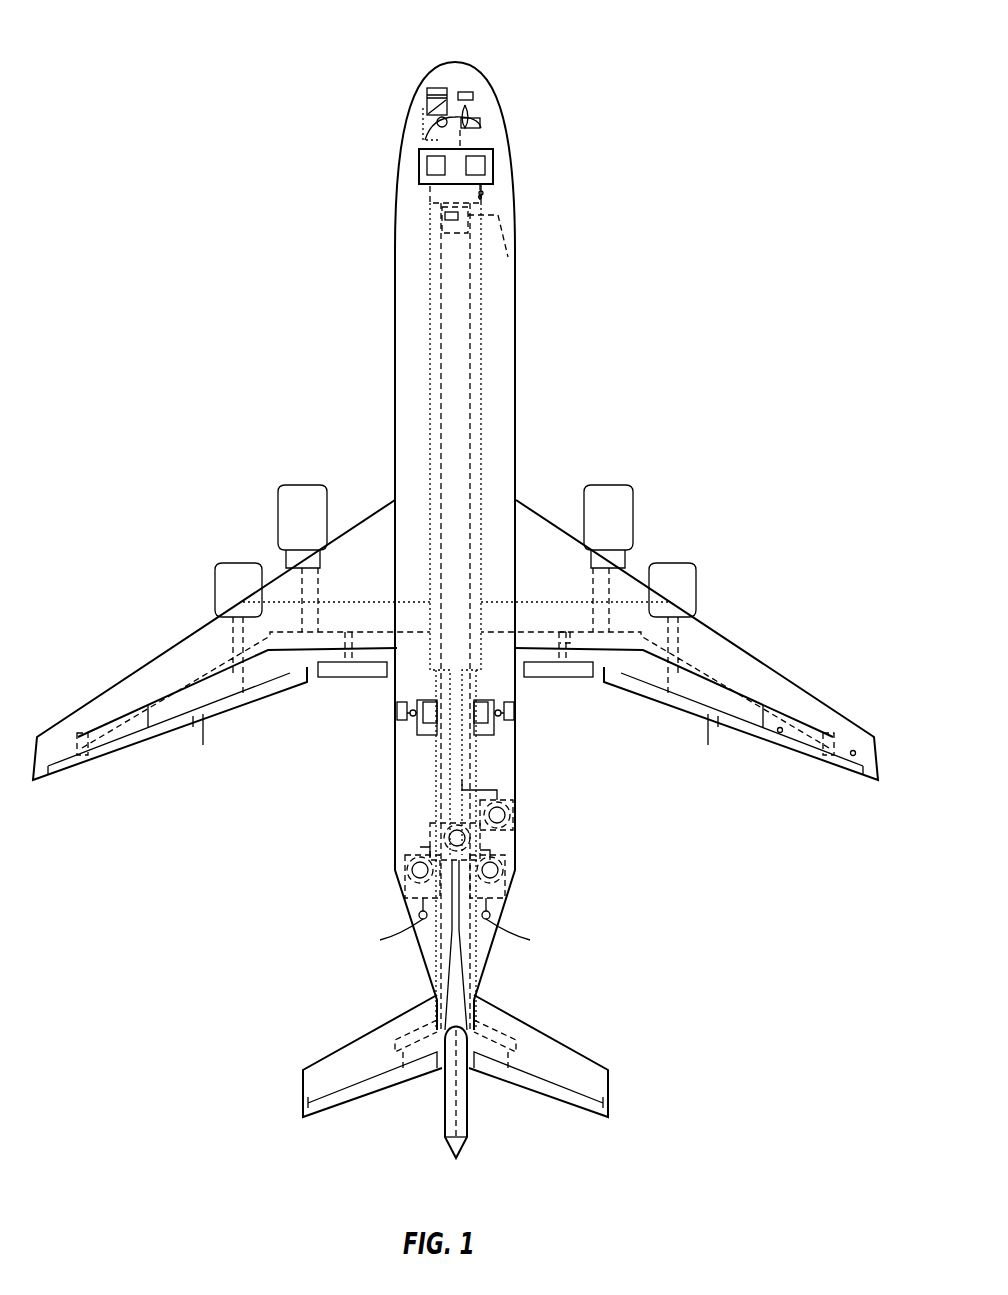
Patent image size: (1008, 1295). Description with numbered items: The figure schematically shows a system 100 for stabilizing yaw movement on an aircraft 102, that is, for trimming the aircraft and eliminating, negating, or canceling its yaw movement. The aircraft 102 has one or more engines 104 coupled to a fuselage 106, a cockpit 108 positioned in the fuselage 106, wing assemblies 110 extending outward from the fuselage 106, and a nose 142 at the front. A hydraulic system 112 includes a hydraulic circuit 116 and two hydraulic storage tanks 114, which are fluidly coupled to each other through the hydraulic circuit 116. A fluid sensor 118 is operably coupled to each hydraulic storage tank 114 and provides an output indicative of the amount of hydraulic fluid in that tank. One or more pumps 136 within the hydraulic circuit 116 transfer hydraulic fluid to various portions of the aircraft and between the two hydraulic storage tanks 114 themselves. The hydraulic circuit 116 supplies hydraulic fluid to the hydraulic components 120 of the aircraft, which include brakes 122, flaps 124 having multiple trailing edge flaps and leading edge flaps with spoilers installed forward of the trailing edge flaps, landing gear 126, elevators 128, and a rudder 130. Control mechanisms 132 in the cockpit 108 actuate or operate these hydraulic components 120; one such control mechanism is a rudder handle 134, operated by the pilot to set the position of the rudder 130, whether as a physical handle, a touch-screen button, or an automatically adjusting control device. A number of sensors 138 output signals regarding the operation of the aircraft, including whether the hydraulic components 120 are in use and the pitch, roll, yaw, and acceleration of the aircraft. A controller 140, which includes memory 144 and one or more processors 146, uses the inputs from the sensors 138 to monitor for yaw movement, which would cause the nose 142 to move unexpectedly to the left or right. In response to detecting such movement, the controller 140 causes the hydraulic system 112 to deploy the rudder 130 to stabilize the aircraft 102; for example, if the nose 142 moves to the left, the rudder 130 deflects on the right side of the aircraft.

The system 100 is at (87, 286).
The aircraft 102 is at (412, 86).
The engine 104 is at (305, 492).
The fuselage 106 is at (393, 345).
The cockpit 108 is at (443, 142).
The wing assembly 110 is at (210, 650).
The hydraulic system 112 is at (484, 412).
The hydraulic storage tank 114 is at (415, 901).
The hydraulic circuit 116 is at (540, 600).
The fluid sensor 118 is at (421, 921).
The hydraulic component 120 is at (485, 199).
The brakes 122 is at (493, 181).
The flaps 124 is at (184, 723).
The landing gear 126 is at (443, 222).
The elevators 128 is at (338, 1097).
The rudder 130 is at (462, 1147).
The control mechanism 132 is at (438, 80).
The rudder handle 134 is at (474, 92).
The pump 136 is at (430, 825).
The sensor 138 is at (416, 165).
The controller 140 is at (430, 195).
The nose 142 is at (461, 86).
The memory 144 is at (418, 173).
The processor 146 is at (486, 194).